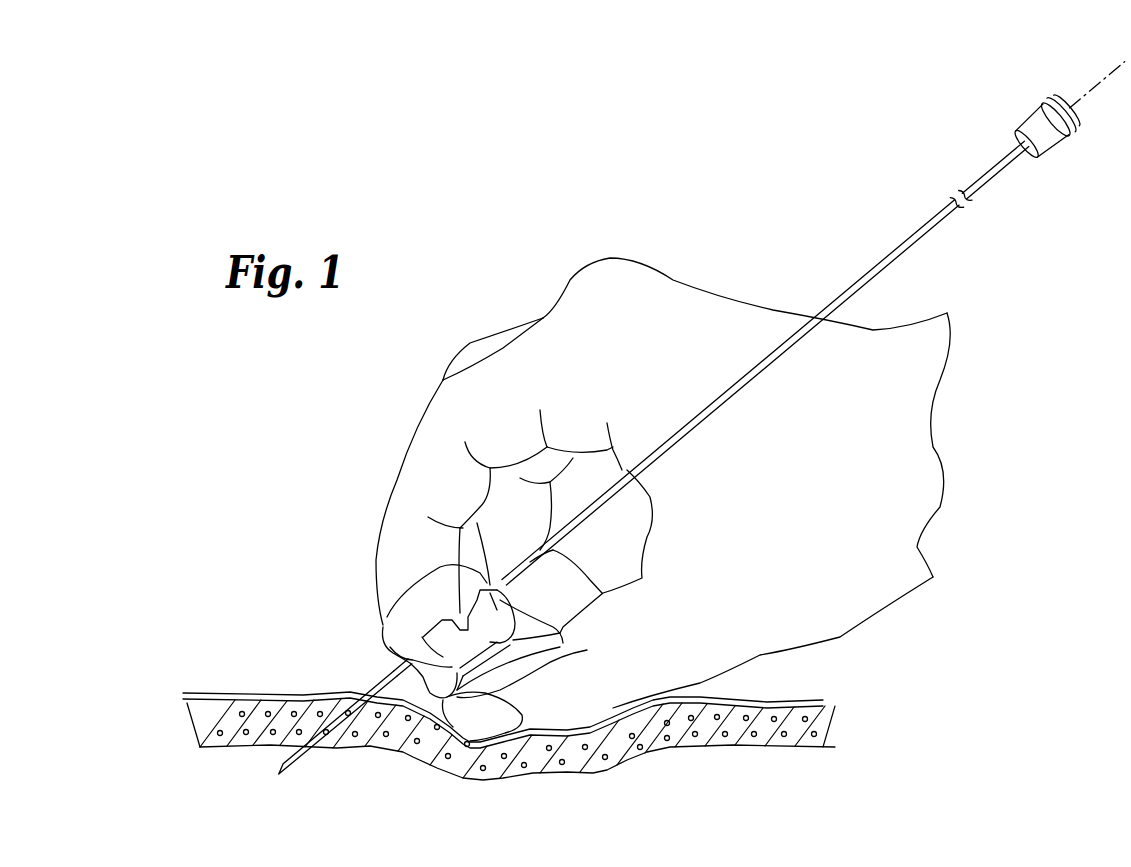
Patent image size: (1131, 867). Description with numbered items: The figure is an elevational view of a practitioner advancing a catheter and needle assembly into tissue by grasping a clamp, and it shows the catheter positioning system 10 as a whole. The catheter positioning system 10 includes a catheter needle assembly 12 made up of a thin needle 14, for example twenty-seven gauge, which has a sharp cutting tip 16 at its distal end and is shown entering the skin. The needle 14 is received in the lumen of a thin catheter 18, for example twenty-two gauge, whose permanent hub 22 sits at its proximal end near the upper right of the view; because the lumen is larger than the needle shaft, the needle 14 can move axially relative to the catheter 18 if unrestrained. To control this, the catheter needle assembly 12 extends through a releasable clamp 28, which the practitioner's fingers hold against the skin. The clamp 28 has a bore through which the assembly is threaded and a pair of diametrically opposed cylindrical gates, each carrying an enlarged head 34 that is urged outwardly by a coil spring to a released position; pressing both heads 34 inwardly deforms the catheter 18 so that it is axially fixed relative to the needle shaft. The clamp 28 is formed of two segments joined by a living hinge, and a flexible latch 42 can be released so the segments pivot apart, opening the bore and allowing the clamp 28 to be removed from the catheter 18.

The catheter positioning system 10 is at (332, 595).
The catheter needle assembly 12 is at (813, 312).
The needle 14 is at (1102, 81).
The sharp cutting tip 16 is at (277, 775).
The catheter 18 is at (900, 262).
The permanent hub 22 is at (1057, 152).
The releasable clamp 28 is at (397, 660).
The enlarged head 34 is at (587, 650).
The flexible latch 42 is at (448, 590).